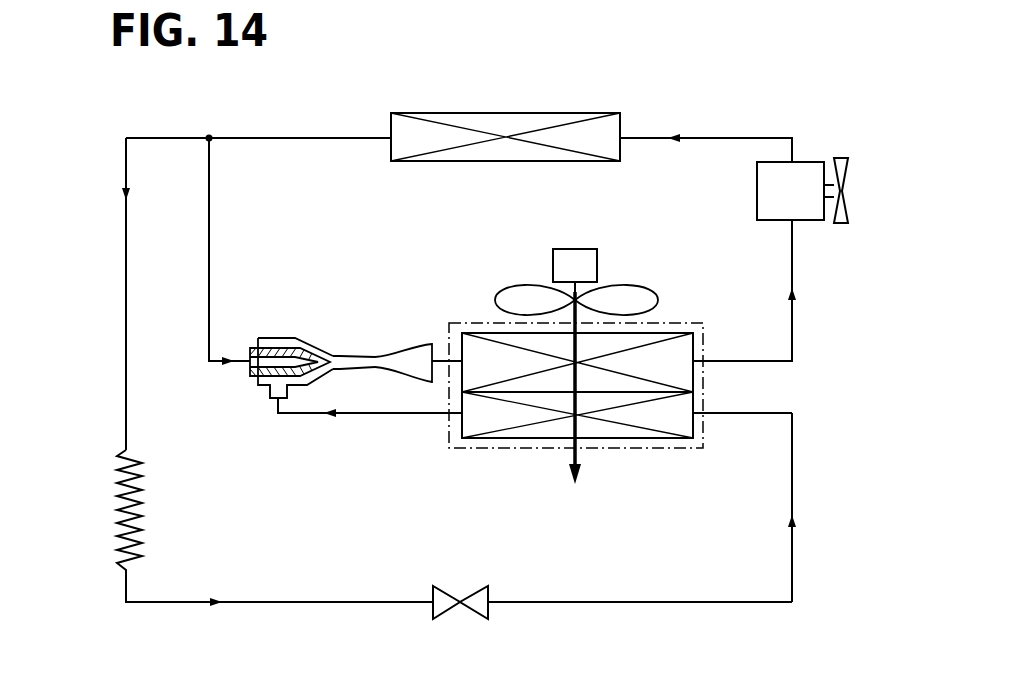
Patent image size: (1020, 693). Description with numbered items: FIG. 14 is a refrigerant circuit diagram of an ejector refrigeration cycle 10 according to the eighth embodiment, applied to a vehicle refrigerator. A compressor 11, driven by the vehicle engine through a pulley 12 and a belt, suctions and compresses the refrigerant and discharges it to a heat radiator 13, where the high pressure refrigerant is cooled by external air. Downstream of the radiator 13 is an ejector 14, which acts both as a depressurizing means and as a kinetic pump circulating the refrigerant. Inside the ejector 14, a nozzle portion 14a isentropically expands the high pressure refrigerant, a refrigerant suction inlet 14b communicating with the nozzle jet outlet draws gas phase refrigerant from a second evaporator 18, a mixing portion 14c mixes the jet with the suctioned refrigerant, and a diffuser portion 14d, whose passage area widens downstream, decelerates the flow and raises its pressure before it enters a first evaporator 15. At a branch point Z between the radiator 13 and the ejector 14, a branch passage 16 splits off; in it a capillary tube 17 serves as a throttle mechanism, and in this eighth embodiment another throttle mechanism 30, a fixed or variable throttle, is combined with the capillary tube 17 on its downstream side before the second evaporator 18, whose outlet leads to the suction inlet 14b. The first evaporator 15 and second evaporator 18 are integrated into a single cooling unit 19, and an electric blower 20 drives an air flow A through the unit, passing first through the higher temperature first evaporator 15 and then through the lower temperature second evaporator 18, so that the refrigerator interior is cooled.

The ejector refrigeration cycle 10 is at (727, 112).
The compressor 11 is at (805, 162).
The pulley 12 is at (850, 182).
The heat radiator 13 is at (523, 113).
The ejector 14 is at (335, 341).
The nozzle portion 14a is at (295, 337).
The refrigerant suction inlet 14b is at (272, 398).
The mixing portion 14c is at (346, 352).
The diffuser portion 14d is at (412, 342).
The first evaporator 15 is at (668, 352).
The branch passage 16 is at (125, 237).
The capillary tube 17 is at (118, 503).
The second evaporator 18 is at (668, 418).
The cooling unit 19 is at (714, 426).
The electric blower 20 is at (648, 292).
The other throttle mechanism 30 is at (448, 619).
The branch point Z is at (209, 134).
The air flow A is at (580, 453).